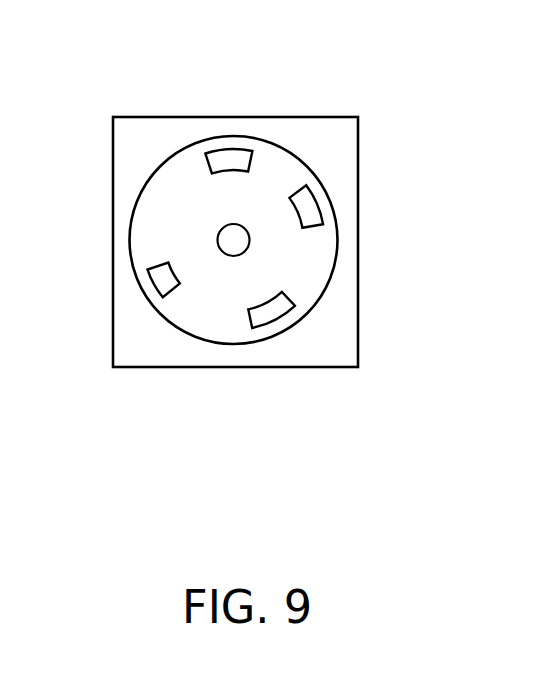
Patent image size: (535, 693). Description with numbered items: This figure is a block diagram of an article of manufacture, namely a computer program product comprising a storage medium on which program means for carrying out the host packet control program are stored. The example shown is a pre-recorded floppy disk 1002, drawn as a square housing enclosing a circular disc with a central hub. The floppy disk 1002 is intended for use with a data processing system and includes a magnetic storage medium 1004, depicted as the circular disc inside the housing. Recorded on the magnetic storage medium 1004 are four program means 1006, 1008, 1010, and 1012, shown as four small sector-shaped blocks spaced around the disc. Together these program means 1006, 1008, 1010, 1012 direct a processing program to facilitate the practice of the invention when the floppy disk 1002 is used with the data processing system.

The pre-recorded floppy disk 1002 is at (266, 80).
The magnetic storage medium 1004 is at (303, 252).
The program means 1006 is at (310, 208).
The program means 1008 is at (243, 158).
The program means 1010 is at (160, 273).
The program means 1012 is at (262, 312).